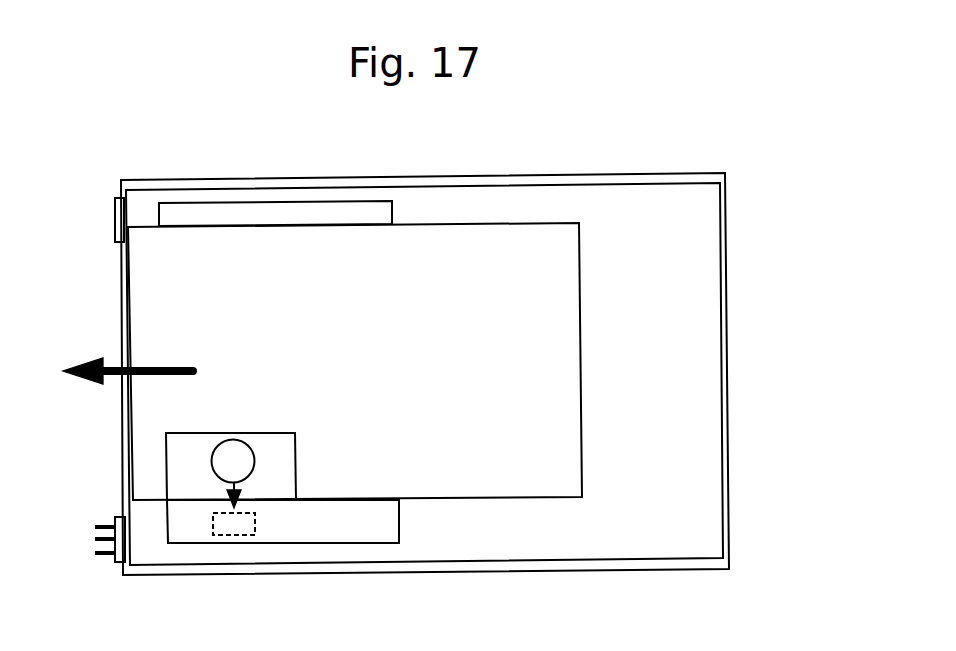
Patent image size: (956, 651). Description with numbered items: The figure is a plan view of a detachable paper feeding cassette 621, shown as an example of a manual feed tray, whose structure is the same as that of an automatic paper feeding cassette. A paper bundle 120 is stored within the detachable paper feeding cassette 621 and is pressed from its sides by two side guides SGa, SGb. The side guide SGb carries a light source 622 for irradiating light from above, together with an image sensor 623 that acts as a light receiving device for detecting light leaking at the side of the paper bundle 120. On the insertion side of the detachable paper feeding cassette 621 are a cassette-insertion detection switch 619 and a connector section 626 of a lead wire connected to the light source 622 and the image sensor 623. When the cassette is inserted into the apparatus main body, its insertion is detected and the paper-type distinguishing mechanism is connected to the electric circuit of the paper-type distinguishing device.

The detachable paper feeding cassette 621 is at (855, 231).
The paper bundle 120 is at (568, 342).
The side guide SGa is at (255, 212).
The side guide SGb is at (289, 477).
The light source 622 is at (236, 453).
The image sensor 623 is at (247, 533).
The cassette-insertion detection switch 619 is at (112, 220).
The connector section 626 is at (120, 562).